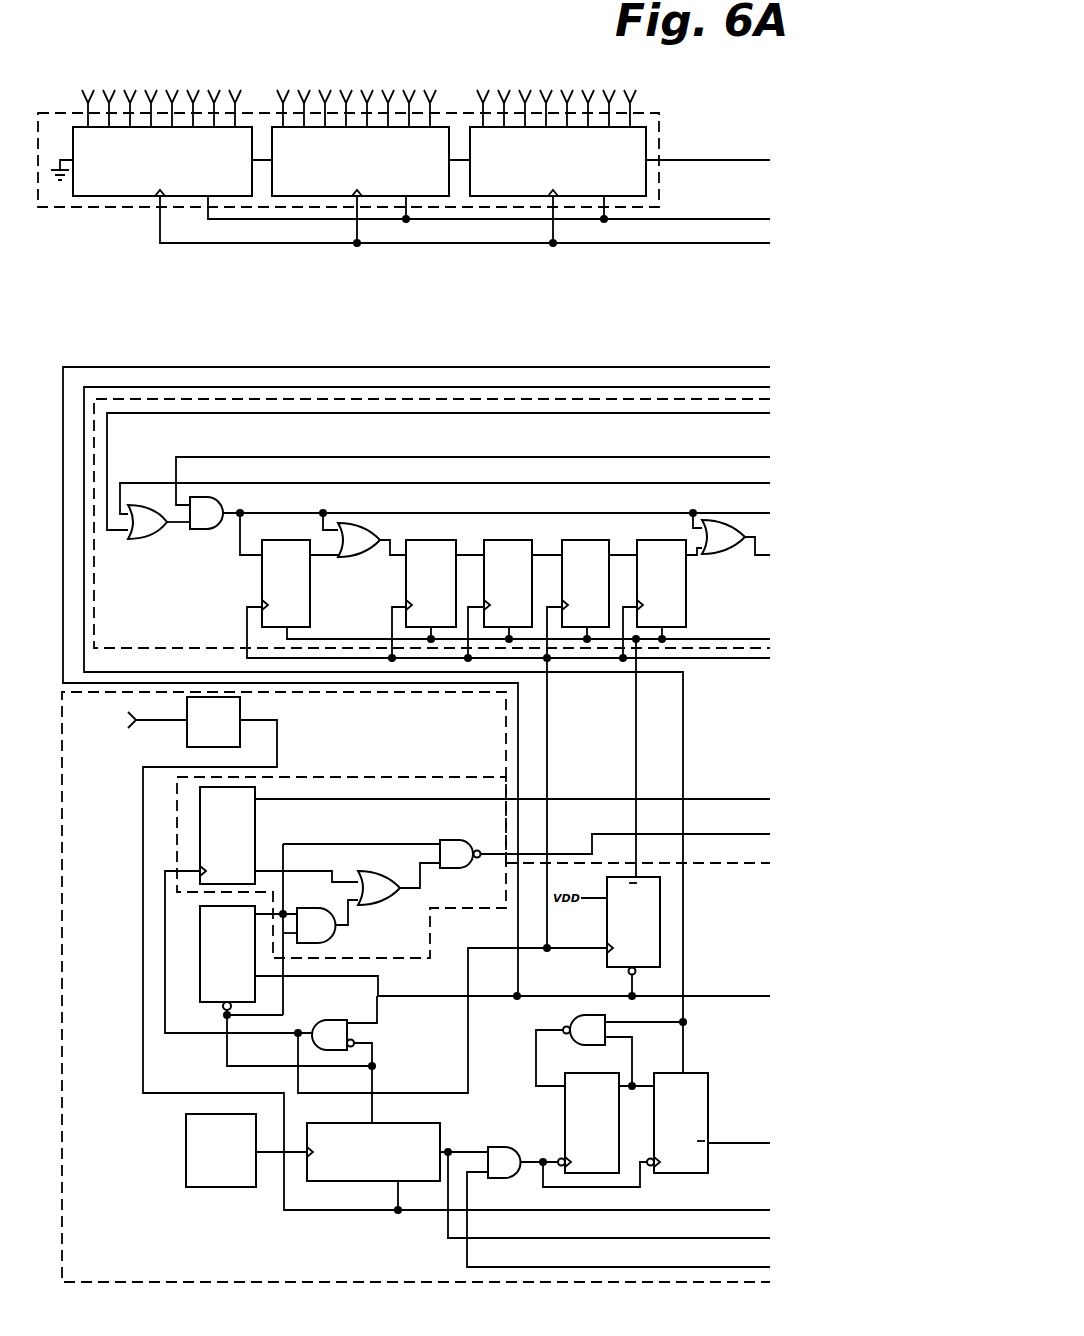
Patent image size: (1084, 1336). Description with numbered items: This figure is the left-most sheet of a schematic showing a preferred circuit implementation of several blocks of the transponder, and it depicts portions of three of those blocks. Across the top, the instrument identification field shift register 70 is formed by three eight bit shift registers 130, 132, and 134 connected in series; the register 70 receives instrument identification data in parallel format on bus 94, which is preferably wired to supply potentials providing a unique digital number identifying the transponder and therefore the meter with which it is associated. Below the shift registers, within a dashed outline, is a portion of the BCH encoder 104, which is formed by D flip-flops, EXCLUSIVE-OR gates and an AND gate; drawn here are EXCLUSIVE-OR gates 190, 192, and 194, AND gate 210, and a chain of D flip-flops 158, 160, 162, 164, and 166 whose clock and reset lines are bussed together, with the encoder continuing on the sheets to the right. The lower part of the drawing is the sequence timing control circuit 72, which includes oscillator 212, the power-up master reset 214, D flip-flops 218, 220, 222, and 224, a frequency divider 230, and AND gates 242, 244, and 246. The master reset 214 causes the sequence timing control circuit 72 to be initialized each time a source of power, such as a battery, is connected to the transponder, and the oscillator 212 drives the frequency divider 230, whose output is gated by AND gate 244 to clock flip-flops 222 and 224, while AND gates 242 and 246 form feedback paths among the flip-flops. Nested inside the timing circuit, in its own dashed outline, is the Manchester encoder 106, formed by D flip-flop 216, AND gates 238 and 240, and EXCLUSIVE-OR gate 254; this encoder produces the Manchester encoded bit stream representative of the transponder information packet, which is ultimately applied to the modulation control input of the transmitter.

The bus 94 is at (455, 95).
The eight bit shift register 130 is at (130, 172).
The eight bit shift register 132 is at (330, 172).
The eight bit shift register 134 is at (528, 172).
The instrument identification field shift register 70 is at (97, 207).
The BCH encoder 104 is at (300, 399).
The EXCLUSIVE-OR gate 190 is at (147, 522).
The AND gate 210 is at (206, 513).
The EXCLUSIVE-OR gate 192 is at (359, 540).
The EXCLUSIVE-OR gate 194 is at (723, 537).
The D flip-flop 158 is at (272, 590).
The D flip-flop 160 is at (417, 590).
The D flip-flop 162 is at (494, 590).
The D flip-flop 164 is at (571, 590).
The D flip-flop 166 is at (647, 590).
The sequence timing control circuit 72 is at (62, 1103).
The power-up master reset 214 is at (186, 738).
The Manchester encoder 106 is at (177, 842).
The D flip-flop 216 is at (211, 849).
The D flip-flop 218 is at (210, 966).
The AND gate 240 is at (460, 854).
The EXCLUSIVE-OR gate 254 is at (379, 888).
The AND gate 238 is at (330, 934).
The AND gate 242 is at (344, 1044).
The D flip-flop 220 is at (619, 934).
The oscillator 212 is at (221, 1150).
The frequency divider 230 is at (356, 1164).
The AND gate 244 is at (492, 1171).
The D flip-flop 222 is at (576, 1130).
The D flip-flop 224 is at (665, 1130).
The AND gate 246 is at (584, 1030).